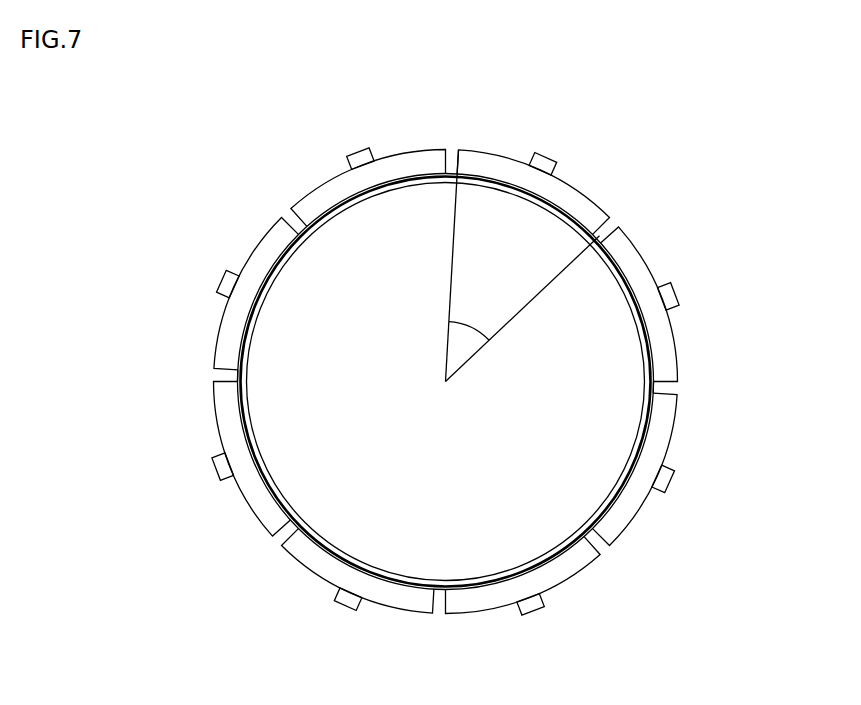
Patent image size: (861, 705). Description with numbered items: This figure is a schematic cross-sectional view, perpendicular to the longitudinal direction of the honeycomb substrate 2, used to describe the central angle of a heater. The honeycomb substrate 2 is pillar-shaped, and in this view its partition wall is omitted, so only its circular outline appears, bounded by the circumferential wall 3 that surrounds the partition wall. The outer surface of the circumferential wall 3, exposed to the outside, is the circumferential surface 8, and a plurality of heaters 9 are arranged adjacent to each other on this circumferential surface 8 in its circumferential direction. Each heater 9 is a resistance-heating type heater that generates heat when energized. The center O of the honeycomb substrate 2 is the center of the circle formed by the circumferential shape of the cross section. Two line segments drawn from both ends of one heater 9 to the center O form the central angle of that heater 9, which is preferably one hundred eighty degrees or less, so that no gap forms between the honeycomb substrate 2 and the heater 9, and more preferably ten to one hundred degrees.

The honeycomb substrate 2 is at (343, 258).
The circumferential wall 3 is at (238, 380).
The circumferential surface 8 is at (652, 389).
The heater 9 is at (398, 162).
The center of the honeycomb substrate O is at (446, 382).